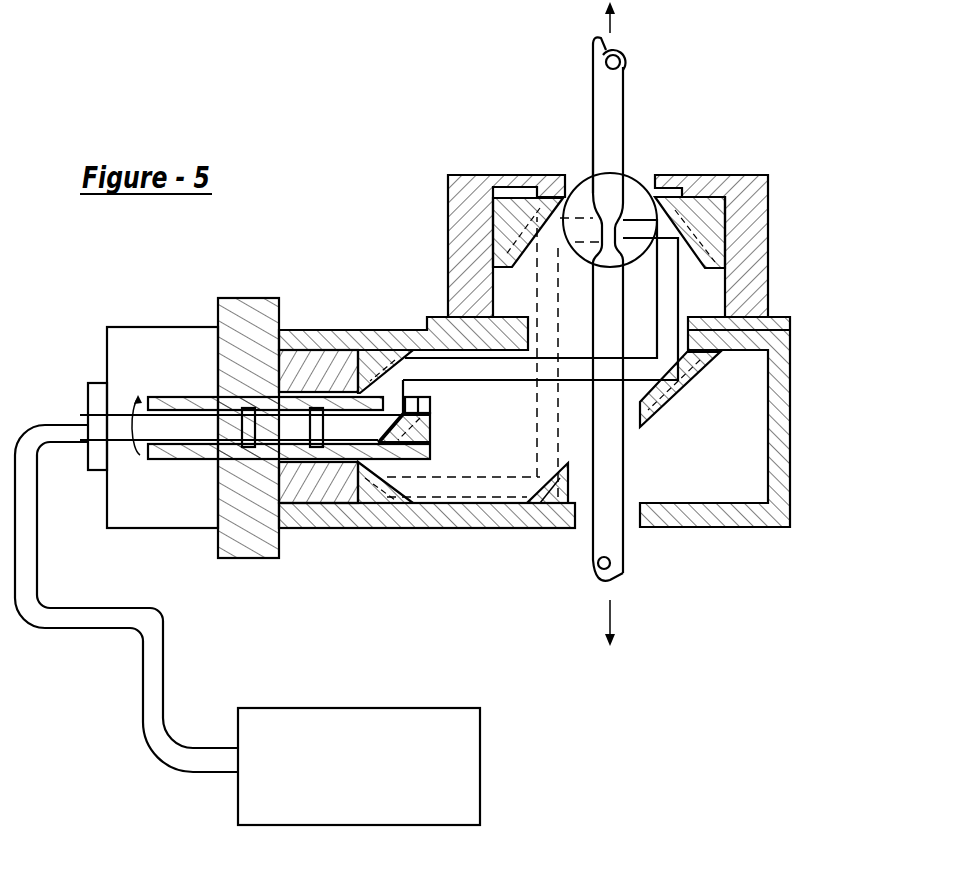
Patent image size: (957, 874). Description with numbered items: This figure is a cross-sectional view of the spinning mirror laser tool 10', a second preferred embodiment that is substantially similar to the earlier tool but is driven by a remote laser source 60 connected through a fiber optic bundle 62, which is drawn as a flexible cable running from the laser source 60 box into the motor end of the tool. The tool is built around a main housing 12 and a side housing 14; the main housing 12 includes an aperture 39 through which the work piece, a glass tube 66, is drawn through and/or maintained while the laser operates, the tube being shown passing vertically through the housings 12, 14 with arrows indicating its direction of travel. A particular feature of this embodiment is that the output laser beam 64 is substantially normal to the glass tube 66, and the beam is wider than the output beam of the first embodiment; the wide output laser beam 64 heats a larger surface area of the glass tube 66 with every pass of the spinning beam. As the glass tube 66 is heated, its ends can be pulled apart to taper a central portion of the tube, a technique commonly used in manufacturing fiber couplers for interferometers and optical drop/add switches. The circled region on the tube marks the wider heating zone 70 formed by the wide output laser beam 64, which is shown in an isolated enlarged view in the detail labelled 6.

The detail circle referencing FIG. 6 is at (614, 266).
The laser tool 10' is at (749, 669).
The main housing 12 is at (434, 528).
The side housing 14 is at (752, 249).
The aperture 39 is at (643, 513).
The remote laser source 60 is at (342, 708).
The fiber optic bundle 62 is at (162, 623).
The output laser beam 64 is at (557, 235).
The glass tube 66 is at (586, 98).
The heating zone 70 is at (580, 164).